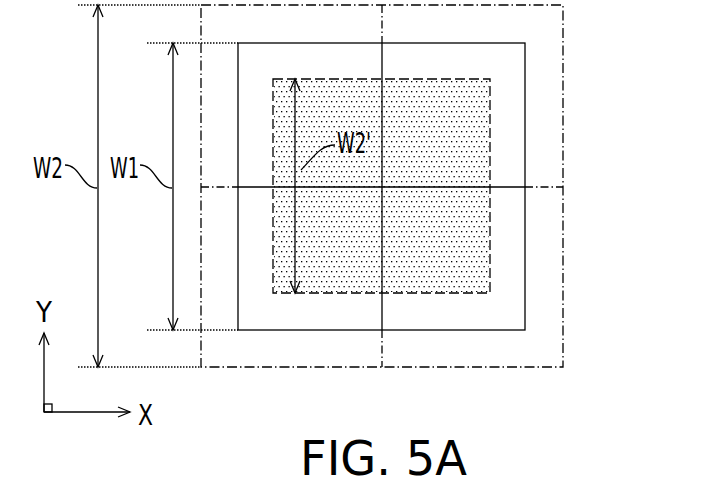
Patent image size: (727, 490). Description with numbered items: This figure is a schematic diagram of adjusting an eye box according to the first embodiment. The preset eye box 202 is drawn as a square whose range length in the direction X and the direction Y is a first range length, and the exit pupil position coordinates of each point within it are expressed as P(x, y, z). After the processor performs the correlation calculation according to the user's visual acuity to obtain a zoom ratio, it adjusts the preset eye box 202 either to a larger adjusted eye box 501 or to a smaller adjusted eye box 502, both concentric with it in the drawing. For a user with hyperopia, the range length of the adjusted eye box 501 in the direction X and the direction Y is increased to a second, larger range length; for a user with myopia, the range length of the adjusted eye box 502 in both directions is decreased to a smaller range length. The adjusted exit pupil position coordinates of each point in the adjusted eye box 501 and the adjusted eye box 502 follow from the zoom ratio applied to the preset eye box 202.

The adjusted eye box 501 is at (563, 41).
The preset eye box 202 is at (525, 107).
The adjusted eye box 502 is at (490, 173).